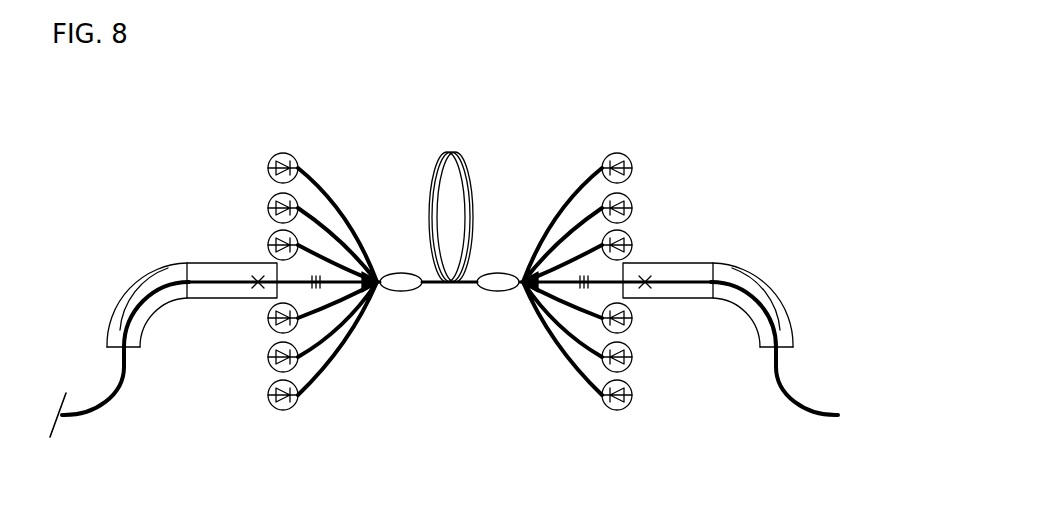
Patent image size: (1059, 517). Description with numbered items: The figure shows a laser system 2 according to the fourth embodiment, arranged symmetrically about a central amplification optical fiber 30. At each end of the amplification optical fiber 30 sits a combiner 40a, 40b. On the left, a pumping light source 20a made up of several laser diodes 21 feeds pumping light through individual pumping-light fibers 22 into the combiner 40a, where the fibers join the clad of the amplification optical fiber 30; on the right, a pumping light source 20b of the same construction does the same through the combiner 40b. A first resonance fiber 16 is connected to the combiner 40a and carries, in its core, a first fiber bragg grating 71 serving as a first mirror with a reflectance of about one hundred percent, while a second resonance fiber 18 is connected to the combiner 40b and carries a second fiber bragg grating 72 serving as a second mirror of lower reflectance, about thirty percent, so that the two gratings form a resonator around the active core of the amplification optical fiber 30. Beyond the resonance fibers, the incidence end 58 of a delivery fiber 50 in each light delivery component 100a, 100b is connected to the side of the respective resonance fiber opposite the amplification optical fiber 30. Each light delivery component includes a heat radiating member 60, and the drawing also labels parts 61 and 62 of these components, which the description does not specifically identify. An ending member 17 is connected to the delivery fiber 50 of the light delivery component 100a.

The laser system 2 is at (733, 92).
The first resonance fiber 16 is at (378, 264).
The ending member 17 is at (58, 422).
The second resonance fiber 18 is at (520, 275).
The pumping light source 20a is at (311, 126).
The pumping light source 20b is at (588, 126).
The laser diode 21 is at (268, 168).
The pumping-light fiber 22 is at (320, 178).
The amplification optical fiber 30 is at (469, 274).
The combiner 40a is at (410, 288).
The combiner 40b is at (500, 288).
The delivery fiber 50 is at (107, 398).
The incidence end 58 is at (280, 290).
The heat radiating member 60 is at (157, 248).
The ferrule 61 is at (215, 275).
The boot 62 is at (123, 308).
The first fiber bragg grating 71 is at (347, 258).
The second fiber bragg grating 72 is at (550, 260).
The light delivery component 100a is at (87, 261).
The light delivery component 100b is at (824, 261).